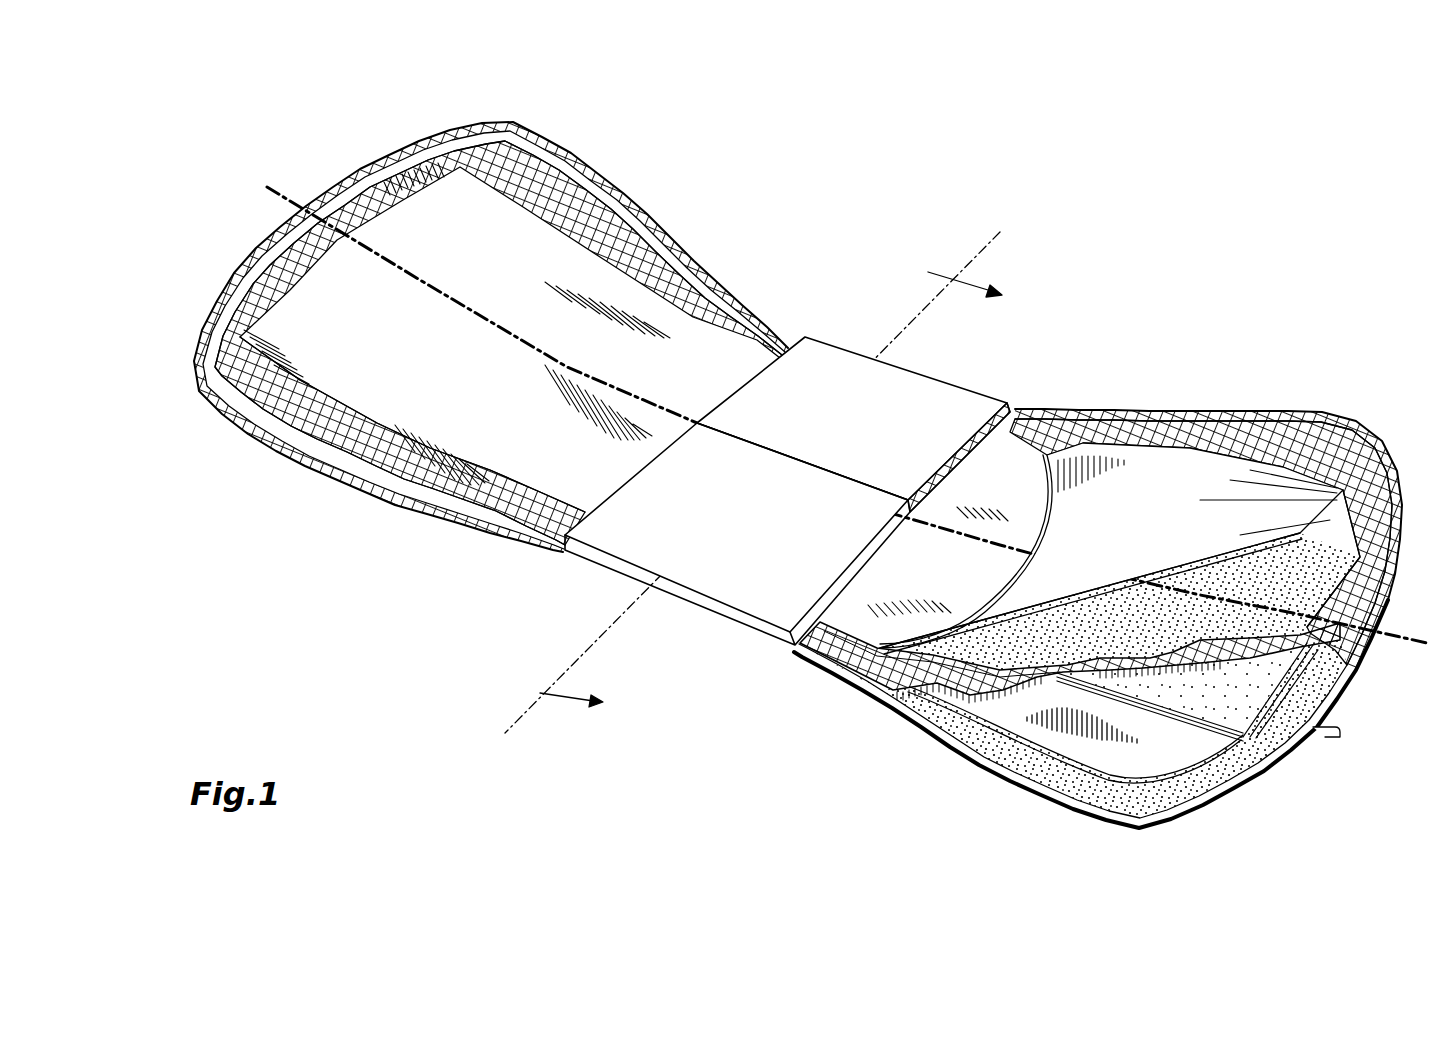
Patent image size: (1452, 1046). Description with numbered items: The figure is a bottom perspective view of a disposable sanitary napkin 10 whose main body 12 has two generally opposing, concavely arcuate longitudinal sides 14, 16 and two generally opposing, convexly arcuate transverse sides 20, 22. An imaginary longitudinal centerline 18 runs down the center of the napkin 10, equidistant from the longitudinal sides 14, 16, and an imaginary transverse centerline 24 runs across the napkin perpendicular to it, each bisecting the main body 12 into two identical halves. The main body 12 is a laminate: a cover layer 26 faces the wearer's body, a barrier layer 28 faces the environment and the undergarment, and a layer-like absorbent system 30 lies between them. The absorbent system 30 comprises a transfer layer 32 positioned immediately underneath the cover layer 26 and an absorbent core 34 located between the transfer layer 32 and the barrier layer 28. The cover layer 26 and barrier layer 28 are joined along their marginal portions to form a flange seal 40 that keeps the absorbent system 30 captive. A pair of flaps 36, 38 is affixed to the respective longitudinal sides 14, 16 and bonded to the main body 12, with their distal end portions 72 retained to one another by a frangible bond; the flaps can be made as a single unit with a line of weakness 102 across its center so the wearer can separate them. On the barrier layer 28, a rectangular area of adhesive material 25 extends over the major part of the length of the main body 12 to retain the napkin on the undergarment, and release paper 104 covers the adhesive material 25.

The sanitary napkin 10 is at (1108, 190).
The main body 12 is at (580, 205).
The longitudinal side 14 is at (488, 530).
The longitudinal side 16 is at (730, 293).
The longitudinal centerline 18 is at (290, 197).
The transverse side 20 is at (242, 258).
The transverse side 22 is at (1347, 673).
The transverse centerline 24 is at (515, 728).
The area of adhesive material 25 is at (1147, 636).
The cover layer 26 is at (1130, 817).
The barrier layer 28 is at (1320, 447).
The absorbent system 30 is at (1340, 737).
The transfer layer 32 is at (1177, 762).
The absorbent core 34 is at (1240, 700).
The flap 36 is at (766, 556).
The flap 38 is at (886, 432).
The flange seal 40 is at (337, 473).
The distal end portion 72 is at (730, 428).
The line of weakness 102 is at (878, 503).
The release paper 104 is at (1181, 515).